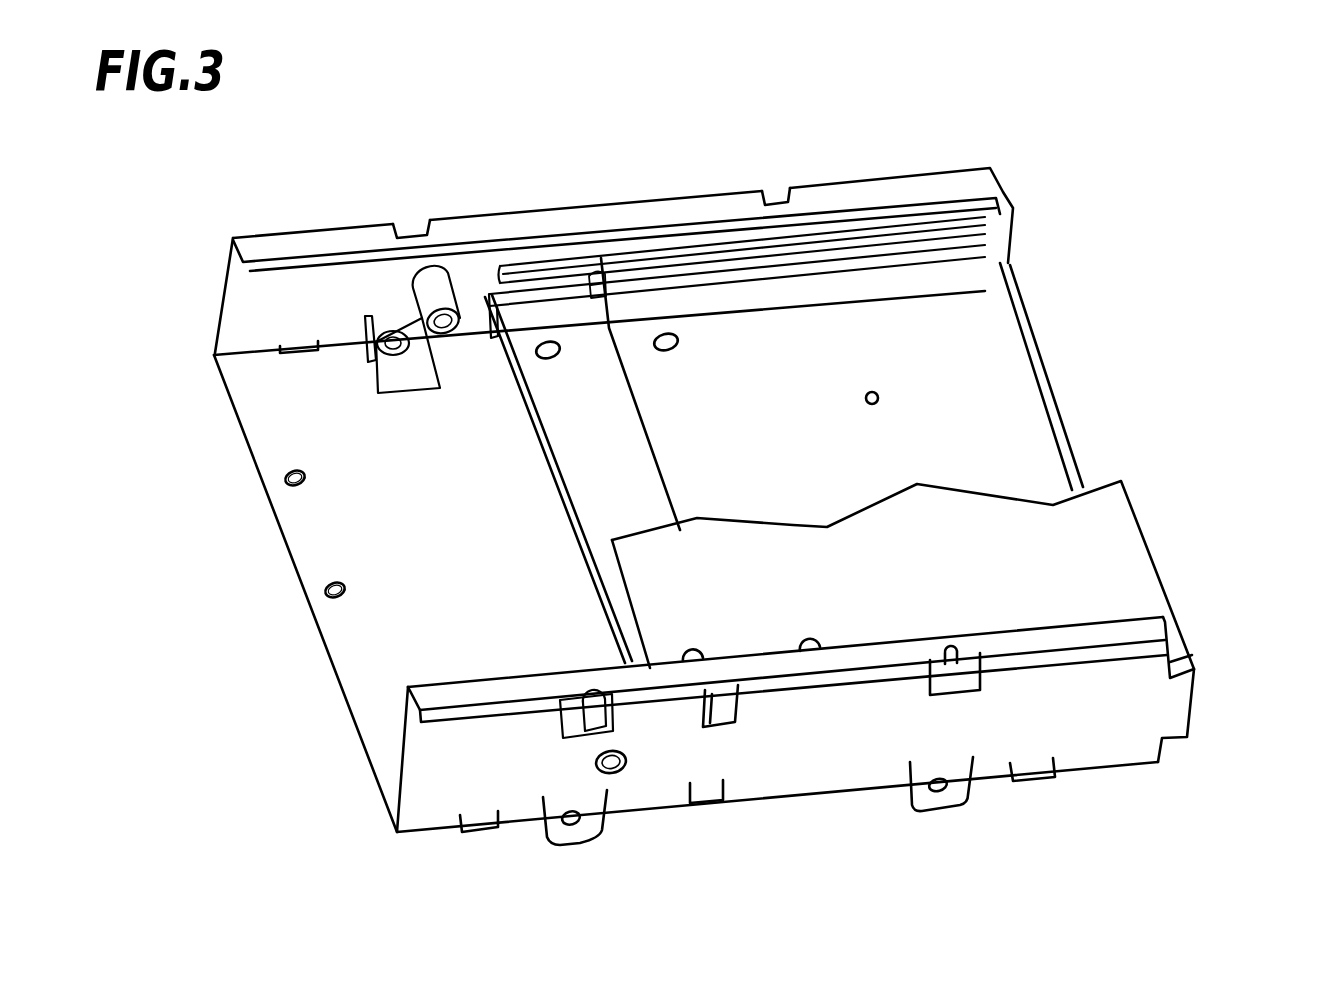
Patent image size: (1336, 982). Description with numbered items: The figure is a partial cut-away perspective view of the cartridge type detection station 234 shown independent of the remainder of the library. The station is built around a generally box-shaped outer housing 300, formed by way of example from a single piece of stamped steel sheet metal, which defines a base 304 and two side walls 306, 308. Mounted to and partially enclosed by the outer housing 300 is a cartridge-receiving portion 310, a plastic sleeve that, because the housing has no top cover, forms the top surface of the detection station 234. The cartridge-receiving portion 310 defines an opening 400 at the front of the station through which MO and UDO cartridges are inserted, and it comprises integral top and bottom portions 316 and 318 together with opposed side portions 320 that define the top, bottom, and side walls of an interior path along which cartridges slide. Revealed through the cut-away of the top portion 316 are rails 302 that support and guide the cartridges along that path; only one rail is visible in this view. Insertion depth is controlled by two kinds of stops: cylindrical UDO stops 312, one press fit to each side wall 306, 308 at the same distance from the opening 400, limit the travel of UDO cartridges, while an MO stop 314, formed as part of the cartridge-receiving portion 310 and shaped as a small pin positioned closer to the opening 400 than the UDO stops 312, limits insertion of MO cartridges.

The cartridge type detection station 234 is at (1118, 208).
The outer housing 300 is at (1012, 806).
The rails 302 is at (840, 293).
The base 304 is at (336, 546).
The side wall 306 is at (250, 303).
The side wall 308 is at (432, 812).
The cartridge-receiving portion 310 is at (1198, 553).
The stops 312 is at (442, 295).
The further stops 314 is at (605, 262).
The top portion 316 is at (935, 595).
The bottom portion 318 is at (842, 467).
The side portions 320 is at (757, 278).
The opening 400 is at (1075, 360).